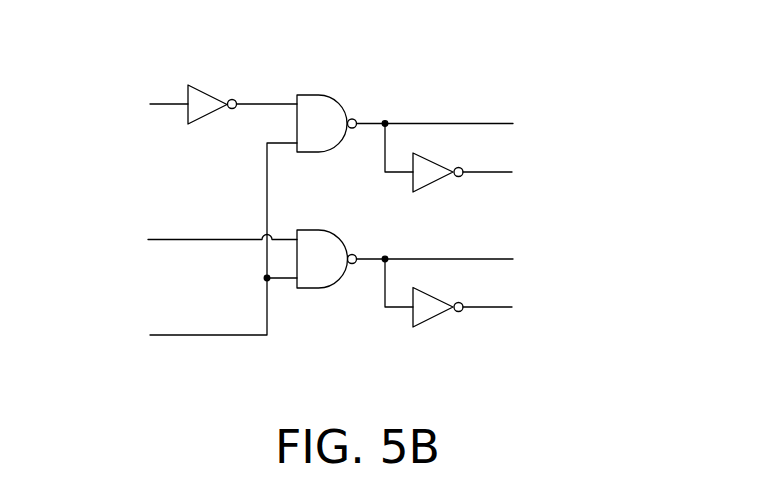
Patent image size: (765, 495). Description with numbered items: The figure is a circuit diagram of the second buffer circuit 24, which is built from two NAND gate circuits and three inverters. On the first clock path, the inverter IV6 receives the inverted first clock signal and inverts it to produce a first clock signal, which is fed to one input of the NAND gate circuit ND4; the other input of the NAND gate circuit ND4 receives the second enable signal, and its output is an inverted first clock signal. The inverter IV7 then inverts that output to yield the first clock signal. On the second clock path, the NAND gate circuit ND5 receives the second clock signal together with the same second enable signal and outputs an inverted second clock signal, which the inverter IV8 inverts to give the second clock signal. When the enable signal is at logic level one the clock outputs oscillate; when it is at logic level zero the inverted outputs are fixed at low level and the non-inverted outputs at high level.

The second buffer circuit 24 is at (582, 55).
The inverter IV6 is at (209, 91).
The NAND gate circuit ND4 is at (328, 98).
The inverter IV7 is at (441, 163).
The NAND gate circuit ND5 is at (328, 233).
The inverter IV8 is at (441, 298).